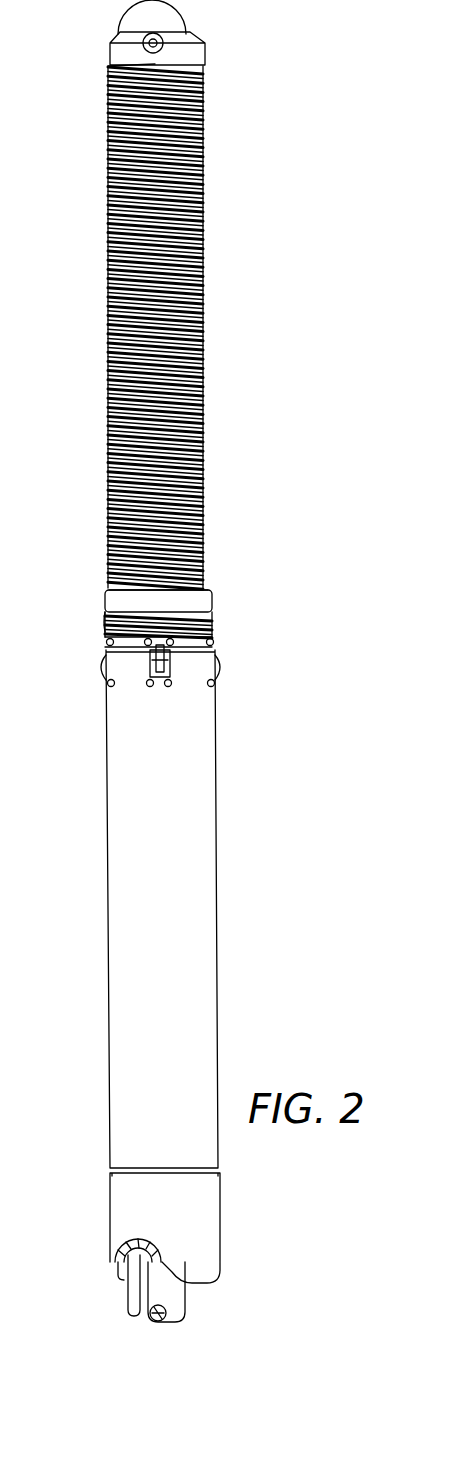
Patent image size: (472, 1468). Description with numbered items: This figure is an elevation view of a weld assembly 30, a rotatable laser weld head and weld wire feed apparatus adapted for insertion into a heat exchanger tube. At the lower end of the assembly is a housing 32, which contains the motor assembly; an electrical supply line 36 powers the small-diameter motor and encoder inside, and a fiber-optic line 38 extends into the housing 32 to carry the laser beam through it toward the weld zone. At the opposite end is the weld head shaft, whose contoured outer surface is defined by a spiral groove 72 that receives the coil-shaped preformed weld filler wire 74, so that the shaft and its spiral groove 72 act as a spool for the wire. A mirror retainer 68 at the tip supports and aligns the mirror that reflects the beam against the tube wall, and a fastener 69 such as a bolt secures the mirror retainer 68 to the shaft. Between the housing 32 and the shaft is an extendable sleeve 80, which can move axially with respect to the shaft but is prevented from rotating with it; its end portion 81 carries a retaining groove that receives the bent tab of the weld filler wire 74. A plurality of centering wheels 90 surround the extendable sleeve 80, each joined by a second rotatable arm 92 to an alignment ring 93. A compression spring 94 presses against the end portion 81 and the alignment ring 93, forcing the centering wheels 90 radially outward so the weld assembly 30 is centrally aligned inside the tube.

The weld assembly 30 is at (228, 843).
The housing 32 is at (222, 1218).
The electrical supply line 36 is at (183, 1299).
The fiber-optic line 38 is at (130, 1296).
The mirror retainer 68 is at (172, 16).
The fastener 69 is at (120, 22).
The spiral groove 72 is at (205, 590).
The preformed weld filler wire 74 is at (200, 226).
The extendable sleeve 80 is at (216, 748).
The end portion 81 is at (207, 602).
The centering wheels 90 is at (220, 666).
The second rotatable arm 92 is at (214, 645).
The alignment ring 93 is at (107, 622).
The compression spring 94 is at (211, 628).